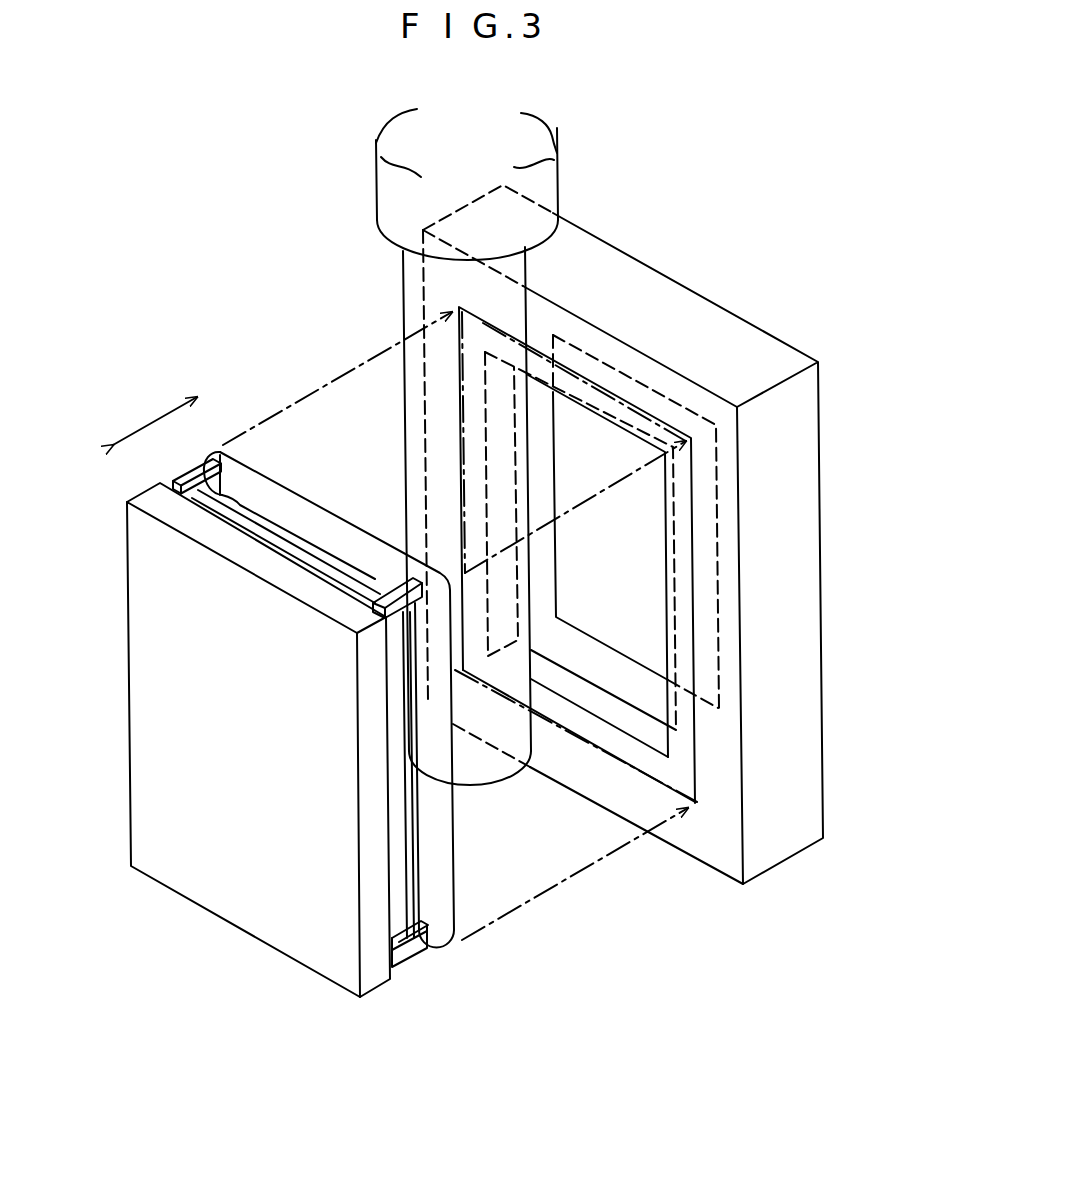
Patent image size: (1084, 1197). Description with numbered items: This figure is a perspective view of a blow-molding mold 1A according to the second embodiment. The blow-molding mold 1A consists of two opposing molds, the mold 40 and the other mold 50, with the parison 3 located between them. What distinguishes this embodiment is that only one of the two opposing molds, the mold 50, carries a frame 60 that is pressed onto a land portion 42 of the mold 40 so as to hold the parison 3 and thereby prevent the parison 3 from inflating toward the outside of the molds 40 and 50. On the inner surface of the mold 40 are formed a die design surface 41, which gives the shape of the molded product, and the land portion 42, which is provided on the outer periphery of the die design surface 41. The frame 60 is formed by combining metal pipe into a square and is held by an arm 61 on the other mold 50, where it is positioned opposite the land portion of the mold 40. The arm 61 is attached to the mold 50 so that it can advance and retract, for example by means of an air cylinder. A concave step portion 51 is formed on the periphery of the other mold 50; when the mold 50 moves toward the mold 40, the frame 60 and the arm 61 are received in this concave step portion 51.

The blow-molding mold 1A is at (624, 140).
The parison 3 is at (500, 770).
The mold 40 is at (806, 636).
The die design surface 41 is at (607, 442).
The land portion 42 is at (591, 340).
The mold 50 is at (224, 908).
The concave step portion 51 is at (396, 876).
The frame 60 is at (285, 503).
The arm 61 is at (192, 481).